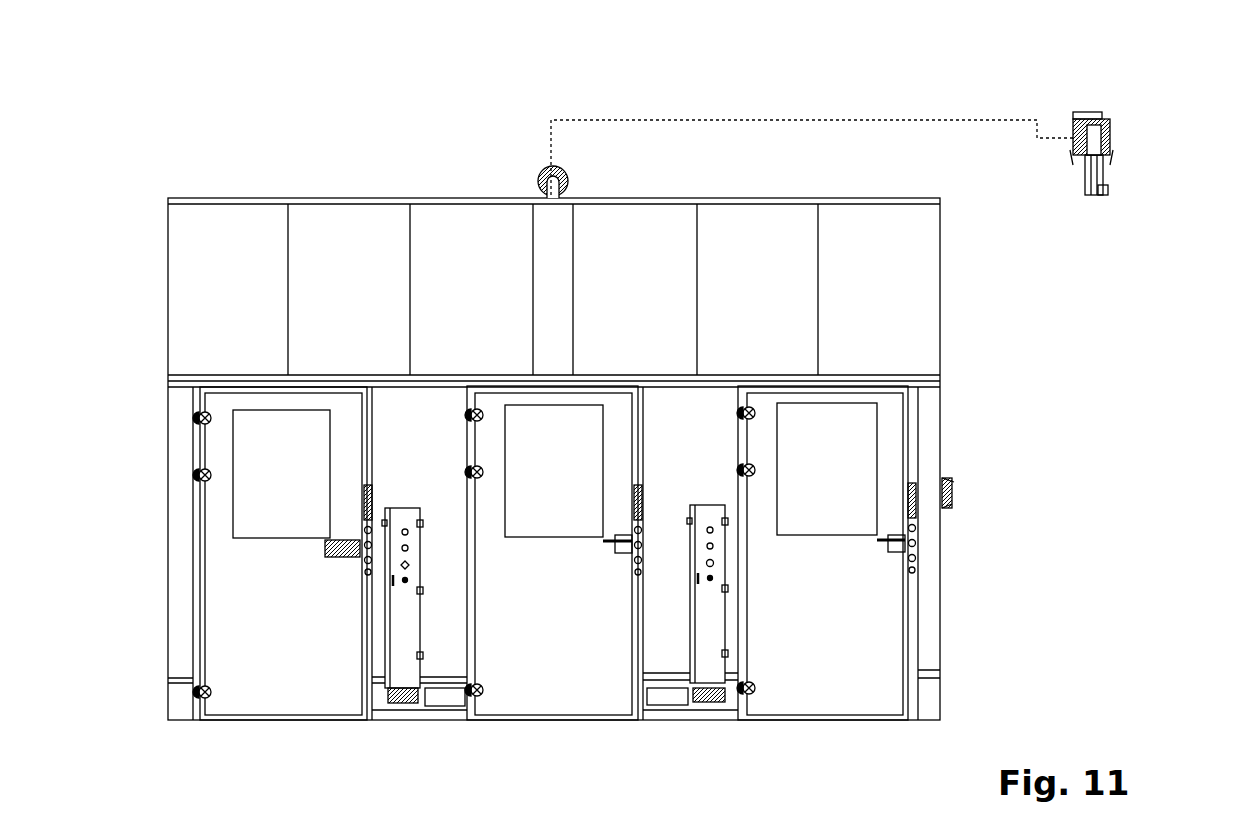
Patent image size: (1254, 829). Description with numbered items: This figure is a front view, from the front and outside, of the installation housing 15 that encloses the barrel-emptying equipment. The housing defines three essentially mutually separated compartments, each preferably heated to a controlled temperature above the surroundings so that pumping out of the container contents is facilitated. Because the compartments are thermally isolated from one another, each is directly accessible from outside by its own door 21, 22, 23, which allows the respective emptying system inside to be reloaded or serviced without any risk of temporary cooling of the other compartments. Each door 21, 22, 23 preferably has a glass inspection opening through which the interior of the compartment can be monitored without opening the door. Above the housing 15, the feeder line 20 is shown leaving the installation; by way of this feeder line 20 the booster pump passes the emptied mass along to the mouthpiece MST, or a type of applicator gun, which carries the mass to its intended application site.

The cabinet / equipment enclosure 15 is at (322, 166).
The feeder line 20 is at (556, 162).
The door 21 is at (232, 618).
The door 22 is at (515, 645).
The door 23 is at (850, 592).
The mouthpiece MST is at (1095, 195).